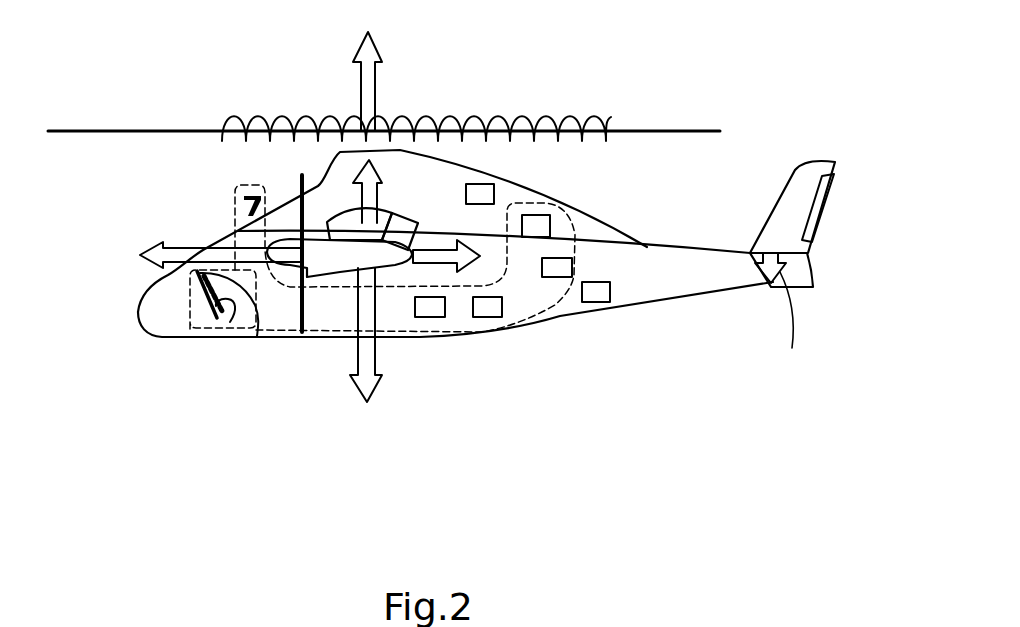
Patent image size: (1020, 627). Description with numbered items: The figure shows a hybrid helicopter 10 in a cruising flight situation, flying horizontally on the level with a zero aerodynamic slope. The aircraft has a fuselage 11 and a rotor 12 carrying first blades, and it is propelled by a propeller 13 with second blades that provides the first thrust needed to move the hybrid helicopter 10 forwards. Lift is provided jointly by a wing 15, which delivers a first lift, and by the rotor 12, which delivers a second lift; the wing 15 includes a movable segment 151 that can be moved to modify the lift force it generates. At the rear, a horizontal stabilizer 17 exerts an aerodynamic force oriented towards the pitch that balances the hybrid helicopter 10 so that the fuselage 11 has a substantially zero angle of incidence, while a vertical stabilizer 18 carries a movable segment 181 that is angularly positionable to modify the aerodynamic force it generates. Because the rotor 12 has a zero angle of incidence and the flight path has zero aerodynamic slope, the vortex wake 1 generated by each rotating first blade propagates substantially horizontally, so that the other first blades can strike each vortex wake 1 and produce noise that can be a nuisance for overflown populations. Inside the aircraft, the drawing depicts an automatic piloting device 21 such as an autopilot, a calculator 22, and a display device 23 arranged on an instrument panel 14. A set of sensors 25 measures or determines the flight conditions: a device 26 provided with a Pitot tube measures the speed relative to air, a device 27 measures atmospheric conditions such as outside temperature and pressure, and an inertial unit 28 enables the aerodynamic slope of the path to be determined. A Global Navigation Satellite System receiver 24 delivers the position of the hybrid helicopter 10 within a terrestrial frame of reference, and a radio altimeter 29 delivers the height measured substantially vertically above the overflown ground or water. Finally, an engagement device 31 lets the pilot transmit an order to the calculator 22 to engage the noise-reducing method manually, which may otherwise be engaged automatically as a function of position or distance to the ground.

The hybrid helicopter 10 is at (136, 444).
The fuselage 11 is at (170, 337).
The rotor 12 is at (659, 129).
The vortex wake 1 is at (514, 117).
The propeller 13 is at (280, 330).
The instrument panel 14 is at (196, 297).
The wing 15 is at (389, 226).
The movable segment 151 is at (417, 214).
The horizontal stabilizer 17 is at (750, 254).
The vertical stabilizer 18 is at (800, 189).
The movable segment 181 is at (820, 206).
The automatic piloting device 21 is at (502, 303).
The calculator 22 is at (428, 318).
The display device 23 is at (230, 322).
The Global Navigation Satellite System receiver 24 is at (582, 300).
The sensors 25 is at (413, 267).
The device provided with a Pitot tube 26 is at (243, 187).
The device dedicated to measuring atmospheric conditions 27 is at (551, 227).
The inertial unit 28 is at (573, 268).
The radio altimeter 29 is at (494, 194).
The engagement device 31 is at (256, 334).